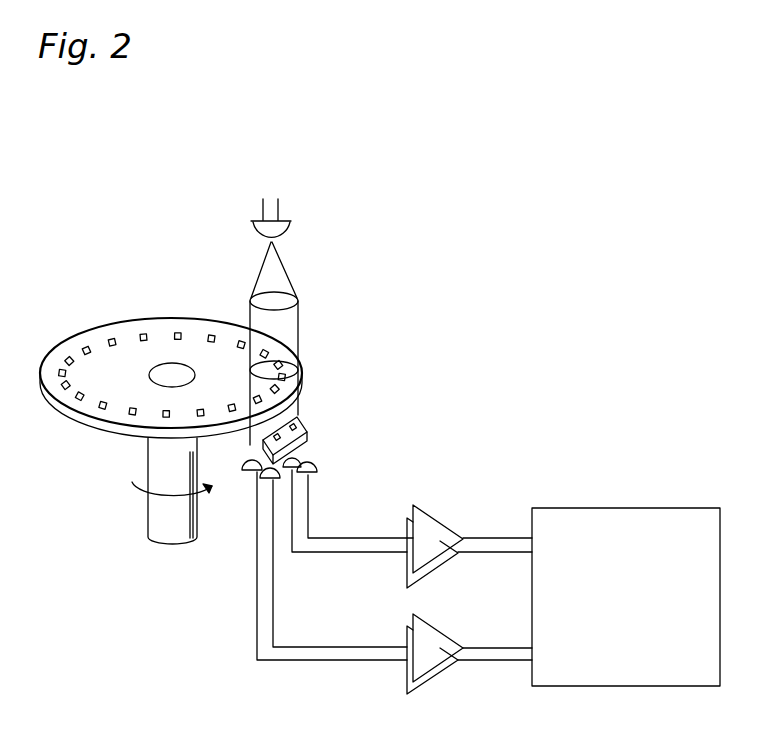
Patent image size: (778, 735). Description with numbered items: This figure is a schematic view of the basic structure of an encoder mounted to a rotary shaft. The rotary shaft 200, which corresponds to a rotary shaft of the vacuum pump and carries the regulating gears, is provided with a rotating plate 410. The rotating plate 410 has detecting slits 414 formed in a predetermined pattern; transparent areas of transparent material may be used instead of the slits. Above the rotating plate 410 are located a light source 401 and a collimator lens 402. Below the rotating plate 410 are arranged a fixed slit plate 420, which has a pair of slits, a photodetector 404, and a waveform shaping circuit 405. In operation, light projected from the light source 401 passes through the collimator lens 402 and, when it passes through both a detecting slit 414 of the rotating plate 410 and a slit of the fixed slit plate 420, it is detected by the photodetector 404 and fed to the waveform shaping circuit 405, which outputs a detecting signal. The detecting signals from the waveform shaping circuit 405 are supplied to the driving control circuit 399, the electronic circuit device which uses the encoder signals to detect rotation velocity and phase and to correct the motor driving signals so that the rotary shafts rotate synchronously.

The rotary shaft 200 is at (163, 458).
The driving control circuit 399 is at (632, 508).
The light source 401 is at (257, 225).
The collimator lens 402 is at (268, 303).
The photodetector 404 is at (307, 463).
The waveform shaping circuit 405 is at (432, 564).
The rotating plate 410 is at (121, 321).
The detecting slit 414 is at (300, 362).
The fixed slit plate 420 is at (305, 418).